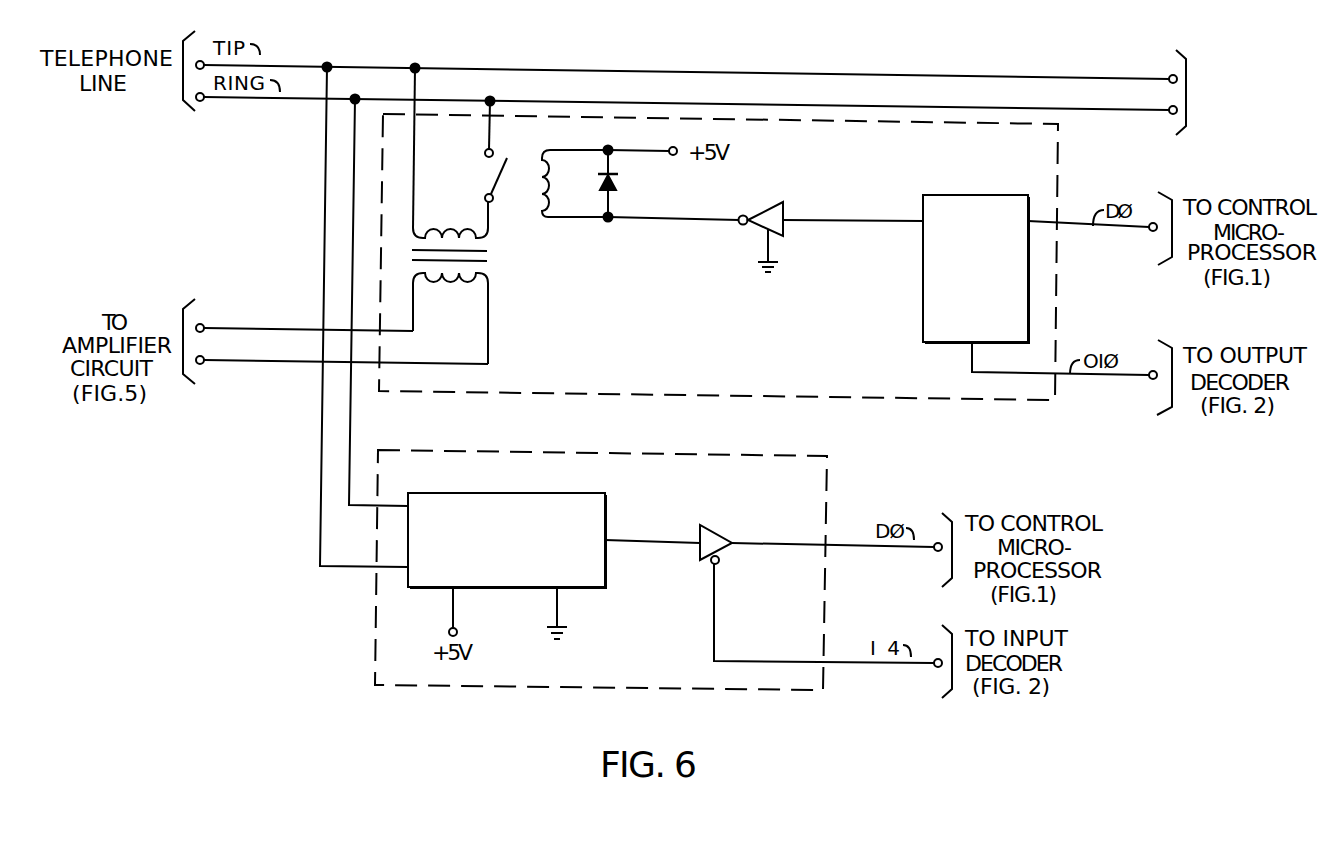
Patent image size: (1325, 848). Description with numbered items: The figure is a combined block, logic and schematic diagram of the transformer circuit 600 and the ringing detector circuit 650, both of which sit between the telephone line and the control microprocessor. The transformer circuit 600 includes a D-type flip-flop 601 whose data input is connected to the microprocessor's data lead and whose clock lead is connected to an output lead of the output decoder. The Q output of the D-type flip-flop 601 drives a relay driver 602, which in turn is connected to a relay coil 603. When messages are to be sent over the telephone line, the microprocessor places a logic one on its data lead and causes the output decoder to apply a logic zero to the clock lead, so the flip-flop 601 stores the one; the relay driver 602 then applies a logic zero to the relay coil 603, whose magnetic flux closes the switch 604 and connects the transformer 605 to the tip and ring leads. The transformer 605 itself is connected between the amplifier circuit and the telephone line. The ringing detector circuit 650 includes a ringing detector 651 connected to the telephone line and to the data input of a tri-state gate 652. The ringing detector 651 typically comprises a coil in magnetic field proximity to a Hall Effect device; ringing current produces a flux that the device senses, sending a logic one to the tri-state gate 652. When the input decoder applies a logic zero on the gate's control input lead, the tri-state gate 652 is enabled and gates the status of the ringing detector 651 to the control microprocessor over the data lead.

The transformer circuit 600 is at (722, 386).
The D-type flip-flop 601 is at (995, 309).
The relay driver 602 is at (768, 205).
The relay coil 603 is at (542, 206).
The switch 604 is at (493, 169).
The transformer 605 is at (487, 268).
The ringing detector circuit 650 is at (792, 481).
The ringing detector 651 is at (606, 501).
The tri-state gate 652 is at (718, 528).